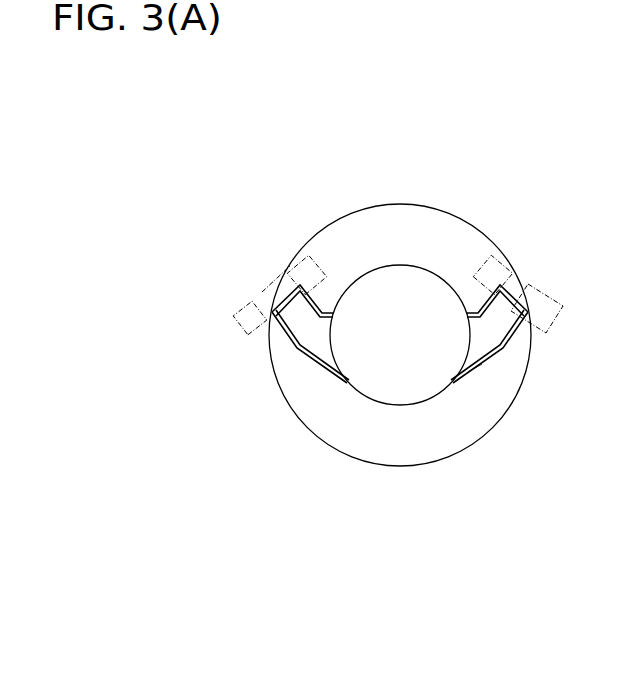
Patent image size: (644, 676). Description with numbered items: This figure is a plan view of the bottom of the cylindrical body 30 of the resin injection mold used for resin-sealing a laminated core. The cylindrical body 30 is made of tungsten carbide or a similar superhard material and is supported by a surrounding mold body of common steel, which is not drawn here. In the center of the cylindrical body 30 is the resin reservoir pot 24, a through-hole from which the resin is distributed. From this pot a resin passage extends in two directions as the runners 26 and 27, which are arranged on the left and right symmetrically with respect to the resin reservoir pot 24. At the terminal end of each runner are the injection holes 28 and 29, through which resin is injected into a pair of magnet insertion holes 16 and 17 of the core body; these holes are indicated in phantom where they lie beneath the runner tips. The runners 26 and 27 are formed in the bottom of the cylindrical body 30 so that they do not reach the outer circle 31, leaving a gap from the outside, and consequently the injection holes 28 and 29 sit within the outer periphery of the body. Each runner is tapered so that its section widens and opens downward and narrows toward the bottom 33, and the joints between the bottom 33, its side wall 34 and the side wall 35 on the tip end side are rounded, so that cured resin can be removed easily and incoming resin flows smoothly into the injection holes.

The magnet insertion hole 16 is at (253, 303).
The magnet insertion hole 17 is at (562, 302).
The resin reservoir pot 24 is at (380, 365).
The runner 26 is at (305, 325).
The runner 27 is at (503, 342).
The injection hole 28 is at (297, 284).
The injection hole 29 is at (500, 283).
The cylindrical body 30 is at (413, 430).
The outer circle 31 is at (477, 340).
The bottom 33 is at (297, 313).
The side wall 34 is at (320, 307).
The side wall on the tip end side 35 is at (280, 293).